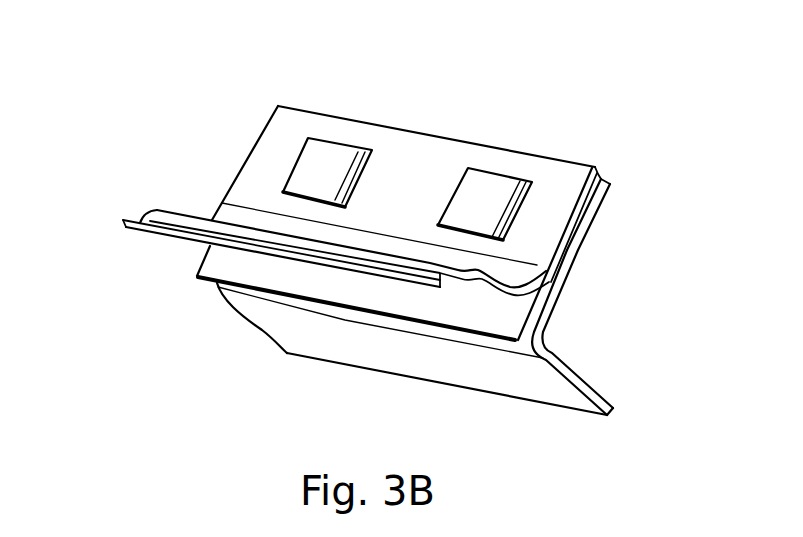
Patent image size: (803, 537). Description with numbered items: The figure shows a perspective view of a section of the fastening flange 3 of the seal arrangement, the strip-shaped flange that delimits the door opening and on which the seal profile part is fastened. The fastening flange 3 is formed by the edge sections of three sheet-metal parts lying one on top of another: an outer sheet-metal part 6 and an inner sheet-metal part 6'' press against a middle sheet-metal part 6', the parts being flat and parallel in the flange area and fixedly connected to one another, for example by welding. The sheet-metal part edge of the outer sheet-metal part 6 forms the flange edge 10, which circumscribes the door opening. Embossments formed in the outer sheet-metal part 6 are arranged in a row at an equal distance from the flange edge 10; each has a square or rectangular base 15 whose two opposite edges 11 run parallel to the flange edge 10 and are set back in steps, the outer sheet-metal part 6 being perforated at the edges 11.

The fastening flange 3 is at (246, 116).
The flange edge 10 is at (588, 163).
The edges 11 is at (367, 148).
The base 15 is at (320, 158).
The outer sheet-metal part 6 is at (334, 210).
The middle sheet-metal part 6' is at (338, 330).
The inner sheet-metal part 6'' is at (604, 297).